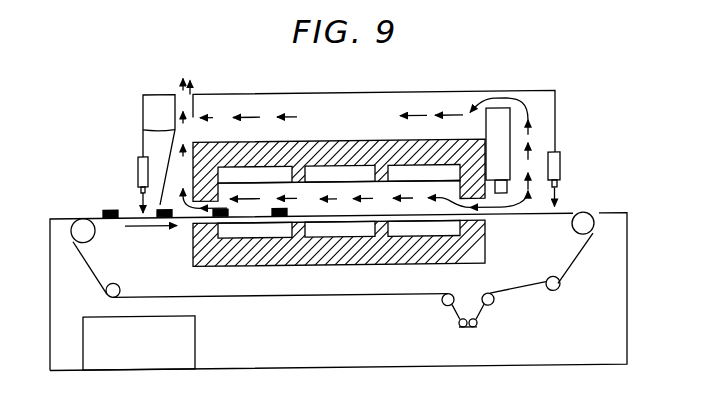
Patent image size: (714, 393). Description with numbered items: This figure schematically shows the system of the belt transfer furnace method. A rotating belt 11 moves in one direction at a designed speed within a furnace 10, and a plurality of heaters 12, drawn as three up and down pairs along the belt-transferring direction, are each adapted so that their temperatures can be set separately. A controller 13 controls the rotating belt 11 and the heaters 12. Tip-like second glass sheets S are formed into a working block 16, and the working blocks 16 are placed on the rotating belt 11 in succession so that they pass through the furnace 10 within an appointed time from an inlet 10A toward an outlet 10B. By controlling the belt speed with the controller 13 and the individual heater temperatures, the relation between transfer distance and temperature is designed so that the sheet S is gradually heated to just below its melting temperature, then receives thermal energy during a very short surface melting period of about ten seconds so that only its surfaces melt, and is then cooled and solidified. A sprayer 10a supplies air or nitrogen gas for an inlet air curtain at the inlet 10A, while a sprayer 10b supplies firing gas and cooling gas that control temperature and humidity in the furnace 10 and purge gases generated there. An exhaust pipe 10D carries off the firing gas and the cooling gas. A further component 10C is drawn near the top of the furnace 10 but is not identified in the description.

The furnace 10 is at (280, 188).
The inlet 10A is at (133, 214).
The sprayer of air for inlet air curtain 10a is at (138, 170).
The outlet 10B is at (564, 210).
The sprayer of air for firing gas and cooling gas 10b is at (560, 170).
The blower 10C is at (497, 113).
The exhaust pipe 10D is at (143, 126).
The rotating belt 11 is at (514, 219).
The heaters 12 is at (395, 176).
The controller 13 is at (195, 335).
The working block 16 is at (103, 213).
The tip-like second glass sheet S is at (112, 219).